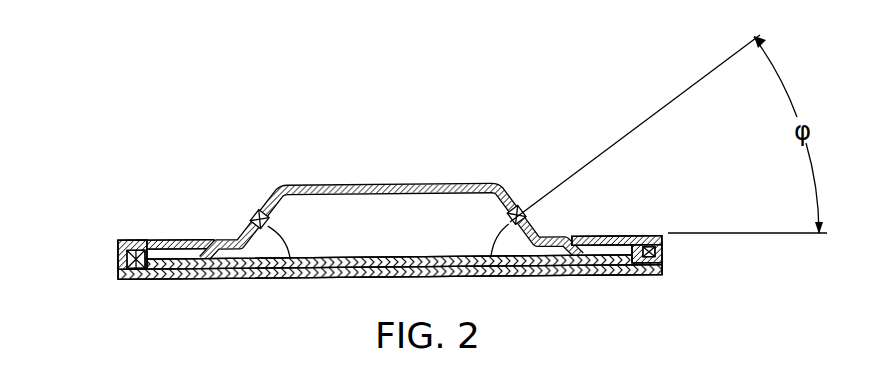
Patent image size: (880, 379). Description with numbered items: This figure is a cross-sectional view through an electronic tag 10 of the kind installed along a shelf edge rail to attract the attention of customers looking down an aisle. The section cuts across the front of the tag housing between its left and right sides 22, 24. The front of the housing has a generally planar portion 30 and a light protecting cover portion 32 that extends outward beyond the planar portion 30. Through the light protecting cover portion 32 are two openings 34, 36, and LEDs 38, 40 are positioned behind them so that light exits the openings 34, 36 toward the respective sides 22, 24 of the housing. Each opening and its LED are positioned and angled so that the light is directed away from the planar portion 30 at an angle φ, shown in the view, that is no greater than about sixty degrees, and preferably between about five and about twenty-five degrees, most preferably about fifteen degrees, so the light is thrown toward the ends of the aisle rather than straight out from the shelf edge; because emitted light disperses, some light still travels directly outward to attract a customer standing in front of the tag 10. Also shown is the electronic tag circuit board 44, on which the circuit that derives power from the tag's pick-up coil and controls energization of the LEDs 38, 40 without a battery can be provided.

The electronic tag 10 is at (392, 205).
The left side 22 is at (118, 258).
The right side 24 is at (662, 245).
The planar portion 30 is at (172, 240).
The light protecting cover portion 32 is at (303, 186).
The opening 34 is at (517, 208).
The opening 36 is at (261, 210).
The LED 38 is at (508, 218).
The LED 40 is at (270, 222).
The electronic tag circuit board 44 is at (367, 258).